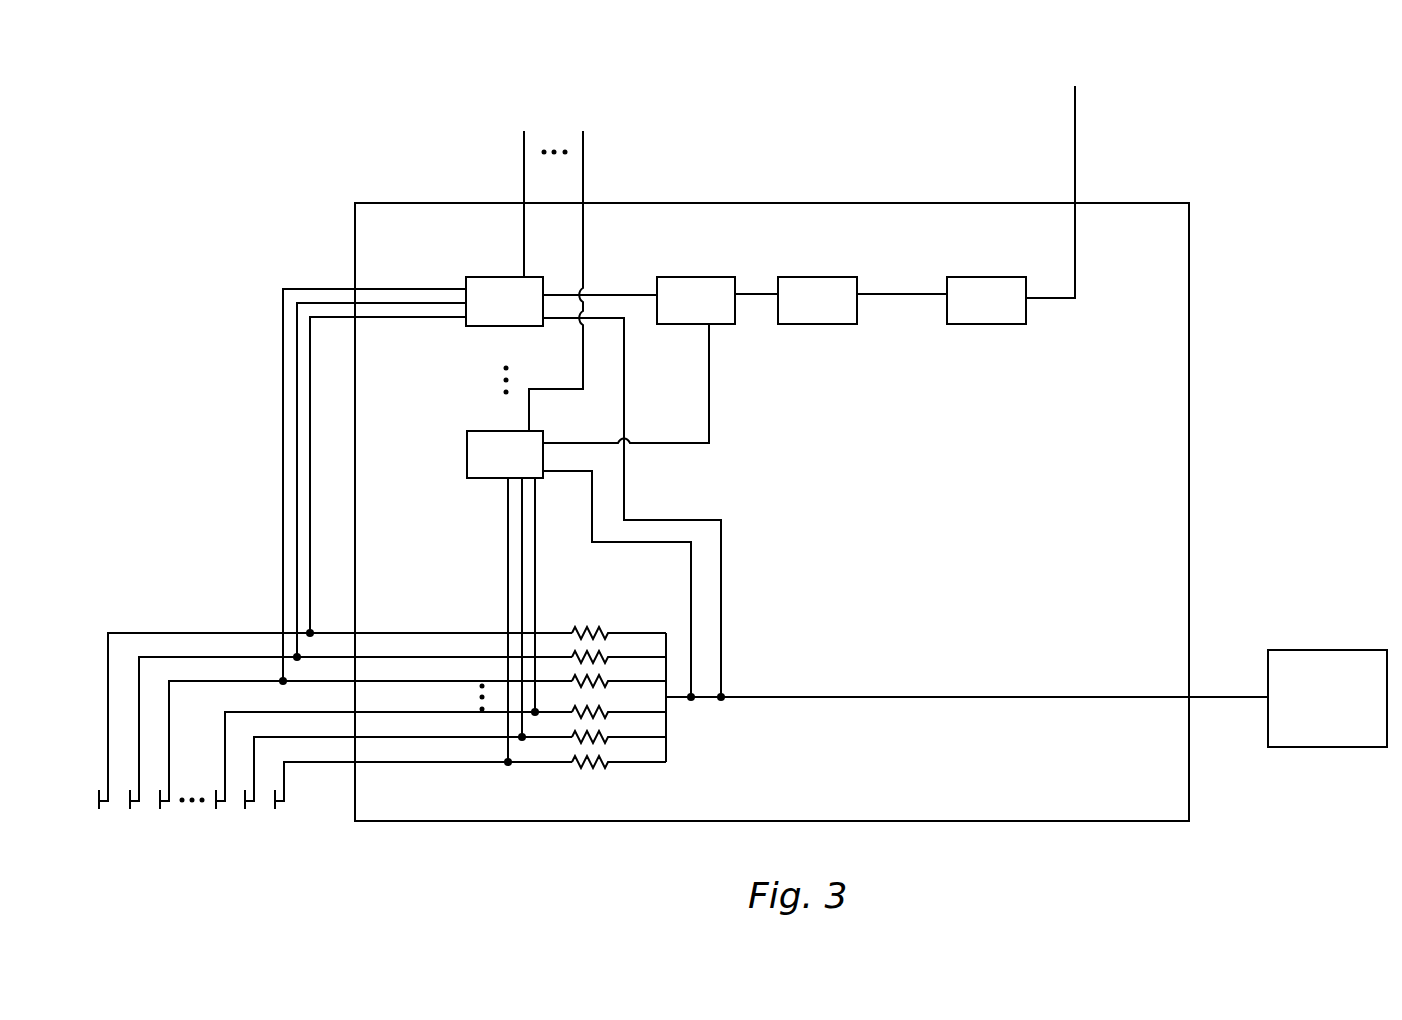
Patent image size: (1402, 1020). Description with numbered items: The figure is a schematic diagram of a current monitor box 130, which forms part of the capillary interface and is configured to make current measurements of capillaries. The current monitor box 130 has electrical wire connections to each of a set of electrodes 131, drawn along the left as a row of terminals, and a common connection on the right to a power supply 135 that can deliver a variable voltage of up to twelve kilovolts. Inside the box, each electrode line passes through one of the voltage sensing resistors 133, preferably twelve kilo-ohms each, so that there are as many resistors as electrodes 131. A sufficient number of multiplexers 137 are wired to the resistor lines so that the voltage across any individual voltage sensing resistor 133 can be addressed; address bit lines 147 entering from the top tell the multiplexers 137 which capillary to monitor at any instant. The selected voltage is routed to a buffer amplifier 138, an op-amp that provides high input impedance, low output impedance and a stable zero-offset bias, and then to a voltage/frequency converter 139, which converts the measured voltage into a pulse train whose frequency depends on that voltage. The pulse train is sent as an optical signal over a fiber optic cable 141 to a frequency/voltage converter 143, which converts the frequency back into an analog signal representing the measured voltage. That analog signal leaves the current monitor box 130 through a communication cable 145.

The current monitor box 130 is at (1190, 347).
The electrodes 131 is at (98, 808).
The voltage sensing resistors 133 is at (590, 766).
The power supply 135 is at (1325, 648).
The multiplexers 137 is at (486, 275).
The buffer amplifier 138 is at (700, 275).
The voltage/frequency converter 139 is at (820, 275).
The fiber optic cable 141 is at (903, 292).
The frequency/voltage converter 143 is at (990, 275).
The communication cable 145 is at (1073, 112).
The address bit lines 147 is at (558, 133).